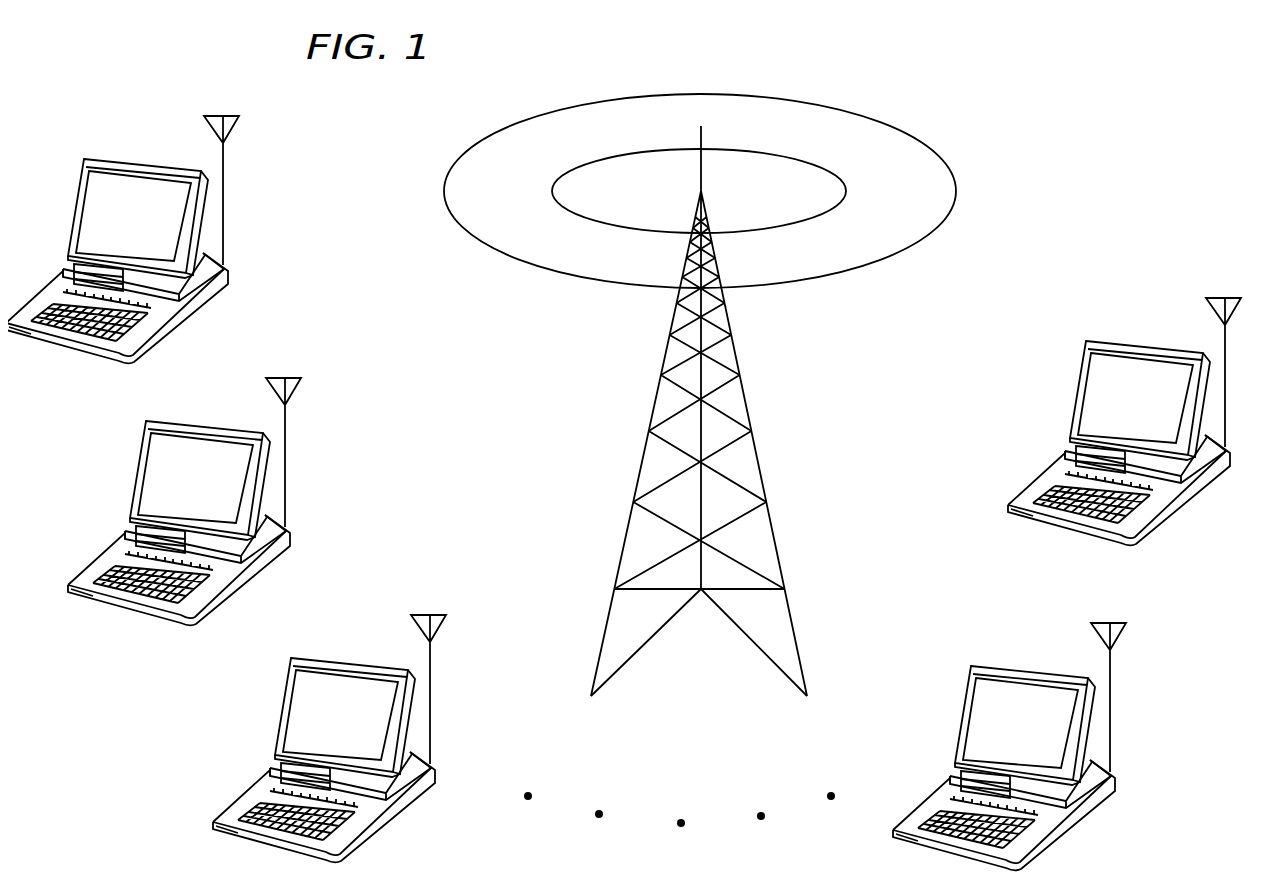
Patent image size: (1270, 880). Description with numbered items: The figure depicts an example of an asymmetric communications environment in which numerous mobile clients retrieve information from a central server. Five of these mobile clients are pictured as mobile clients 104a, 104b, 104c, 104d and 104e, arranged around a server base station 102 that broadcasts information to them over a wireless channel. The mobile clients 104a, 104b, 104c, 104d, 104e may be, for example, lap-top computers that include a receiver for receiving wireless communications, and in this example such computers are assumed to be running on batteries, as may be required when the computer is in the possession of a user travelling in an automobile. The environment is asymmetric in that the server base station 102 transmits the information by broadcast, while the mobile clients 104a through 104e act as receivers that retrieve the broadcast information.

The server base station 102 is at (750, 417).
The mobile client 104a is at (116, 163).
The mobile client 104b is at (138, 473).
The mobile client 104c is at (275, 715).
The mobile client 104d is at (1003, 666).
The mobile client 104e is at (1133, 345).